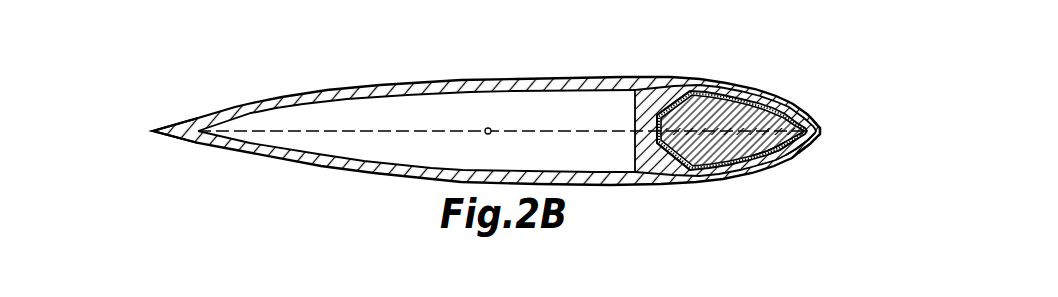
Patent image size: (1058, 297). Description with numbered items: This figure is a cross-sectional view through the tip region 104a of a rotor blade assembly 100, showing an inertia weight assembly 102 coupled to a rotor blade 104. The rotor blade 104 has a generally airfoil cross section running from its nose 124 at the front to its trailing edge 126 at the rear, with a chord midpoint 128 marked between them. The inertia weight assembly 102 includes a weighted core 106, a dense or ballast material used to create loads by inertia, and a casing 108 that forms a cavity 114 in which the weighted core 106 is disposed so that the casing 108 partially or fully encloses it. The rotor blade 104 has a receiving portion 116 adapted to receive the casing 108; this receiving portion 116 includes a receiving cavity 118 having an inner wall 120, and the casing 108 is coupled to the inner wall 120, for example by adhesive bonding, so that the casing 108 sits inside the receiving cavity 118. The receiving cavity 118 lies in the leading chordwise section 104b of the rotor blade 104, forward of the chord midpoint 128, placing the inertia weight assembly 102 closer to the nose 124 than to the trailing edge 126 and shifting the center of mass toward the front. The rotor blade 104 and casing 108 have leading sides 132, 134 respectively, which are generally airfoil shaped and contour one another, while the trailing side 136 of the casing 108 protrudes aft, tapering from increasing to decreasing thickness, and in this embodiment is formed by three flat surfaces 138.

The rotor blade assembly 100 is at (302, 90).
The inertia weight assembly 102 is at (692, 171).
The rotor blade 104 is at (592, 77).
The tip region 104a is at (826, 121).
The leading chordwise section 104b is at (642, 186).
The weighted core 106 is at (753, 148).
The casing 108 is at (761, 103).
The cavity 114 is at (703, 117).
The receiving portion 116 is at (777, 153).
The receiving cavity 118 is at (814, 138).
The inner wall 120 is at (720, 99).
The nose 124 is at (819, 129).
The trailing edge 126 is at (154, 131).
The chord midpoint 128 is at (488, 128).
The leading side of rotor blade 132 is at (812, 114).
The leading side of casing 134 is at (802, 148).
The trailing side 136 is at (672, 104).
The flat surfaces 138 is at (676, 161).